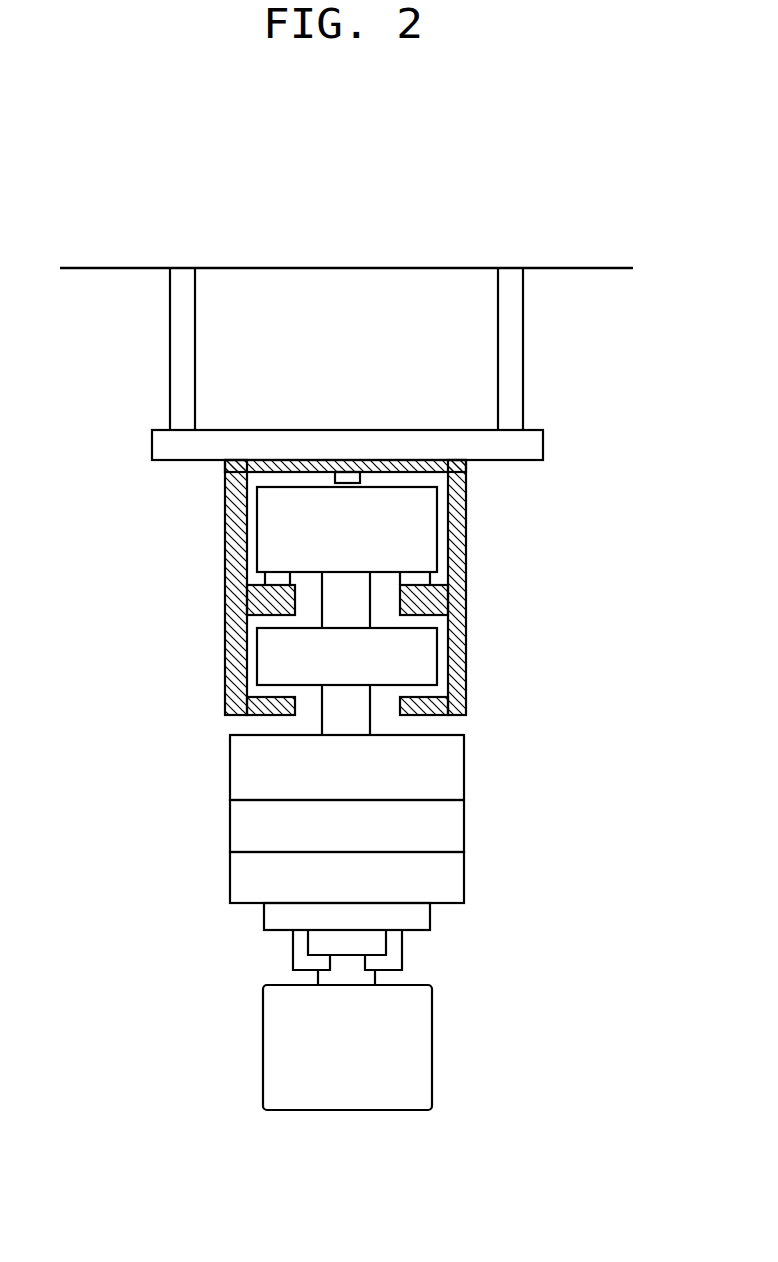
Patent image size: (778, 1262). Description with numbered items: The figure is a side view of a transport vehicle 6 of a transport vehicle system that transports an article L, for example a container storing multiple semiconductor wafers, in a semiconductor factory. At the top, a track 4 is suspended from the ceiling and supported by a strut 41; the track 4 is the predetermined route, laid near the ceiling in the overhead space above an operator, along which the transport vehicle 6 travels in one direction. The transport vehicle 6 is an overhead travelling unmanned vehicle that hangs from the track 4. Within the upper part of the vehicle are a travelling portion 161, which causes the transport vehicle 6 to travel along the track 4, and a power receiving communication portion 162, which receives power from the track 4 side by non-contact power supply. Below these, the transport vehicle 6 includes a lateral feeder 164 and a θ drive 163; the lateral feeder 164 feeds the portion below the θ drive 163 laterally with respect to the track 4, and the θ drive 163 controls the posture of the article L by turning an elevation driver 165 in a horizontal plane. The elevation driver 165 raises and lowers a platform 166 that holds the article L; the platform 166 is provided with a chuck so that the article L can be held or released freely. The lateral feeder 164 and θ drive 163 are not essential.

The strut 41 is at (170, 345).
The track 4 is at (466, 497).
The travelling portion 161 is at (400, 540).
The power receiving communication portion 162 is at (400, 655).
The transport vehicle 6 is at (366, 864).
The lateral feeder 164 is at (243, 760).
The θ drive 163 is at (243, 830).
The elevation driver 165 is at (243, 883).
The platform 166 is at (275, 918).
The article L is at (415, 1060).